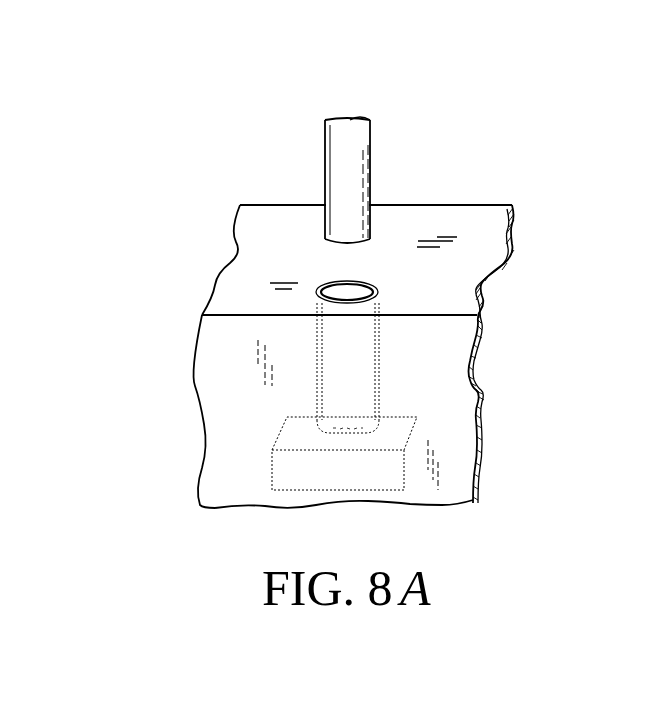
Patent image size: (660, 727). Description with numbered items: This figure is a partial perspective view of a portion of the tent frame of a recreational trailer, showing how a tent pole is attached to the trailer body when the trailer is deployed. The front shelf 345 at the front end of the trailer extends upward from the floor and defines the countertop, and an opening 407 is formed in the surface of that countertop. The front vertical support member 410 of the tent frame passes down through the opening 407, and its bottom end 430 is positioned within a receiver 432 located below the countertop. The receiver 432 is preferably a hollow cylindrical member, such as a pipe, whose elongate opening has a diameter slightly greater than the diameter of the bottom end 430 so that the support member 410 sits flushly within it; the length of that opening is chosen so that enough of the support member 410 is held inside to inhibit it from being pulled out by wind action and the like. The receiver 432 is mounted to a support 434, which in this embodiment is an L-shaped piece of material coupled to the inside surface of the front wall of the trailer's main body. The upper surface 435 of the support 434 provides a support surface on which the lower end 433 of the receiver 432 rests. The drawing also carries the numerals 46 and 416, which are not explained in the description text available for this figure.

The support block 46 is at (180, 283).
The front shelf 345 is at (277, 240).
The front vertical support member 410 is at (292, 153).
The bottom end 430 is at (350, 228).
The opening 407 is at (376, 279).
The opening 416 is at (337, 290).
The receiver 432 is at (378, 355).
The lower end 433 is at (350, 422).
The upper surface 435 is at (290, 430).
The support 434 is at (294, 473).